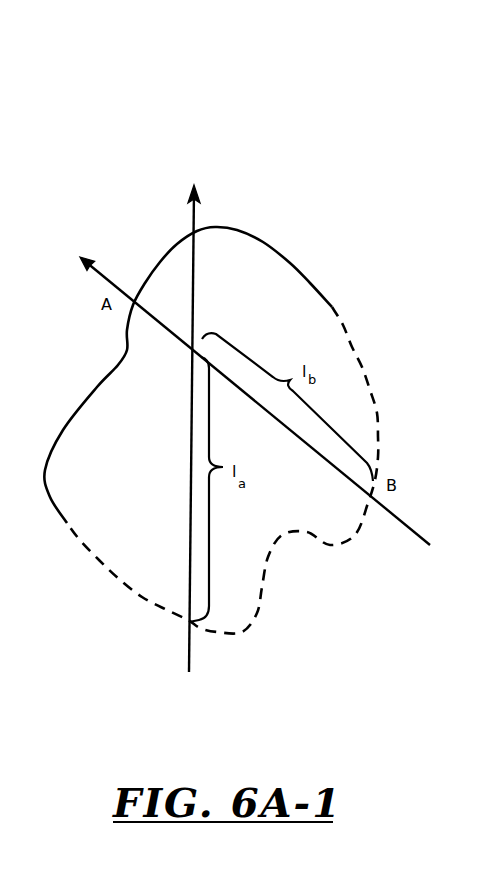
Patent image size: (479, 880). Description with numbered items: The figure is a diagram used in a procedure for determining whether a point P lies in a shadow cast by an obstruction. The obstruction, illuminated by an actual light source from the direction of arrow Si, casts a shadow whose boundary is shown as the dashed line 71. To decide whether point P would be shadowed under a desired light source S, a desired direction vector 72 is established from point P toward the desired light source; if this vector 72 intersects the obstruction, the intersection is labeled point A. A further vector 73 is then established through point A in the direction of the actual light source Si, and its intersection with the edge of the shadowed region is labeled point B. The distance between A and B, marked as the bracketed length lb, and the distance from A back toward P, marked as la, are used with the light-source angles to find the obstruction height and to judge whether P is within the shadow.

The dashed line 71 is at (330, 549).
The desired direction vector 72 is at (195, 215).
The vector 73 is at (102, 266).